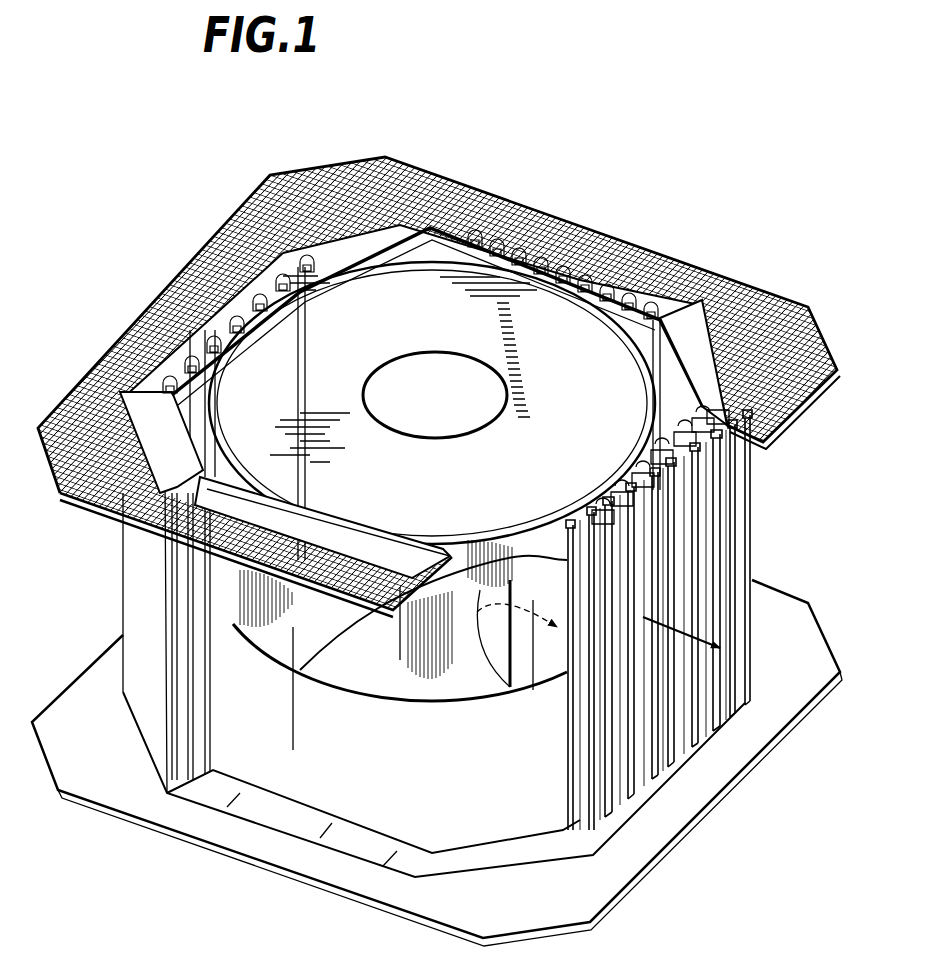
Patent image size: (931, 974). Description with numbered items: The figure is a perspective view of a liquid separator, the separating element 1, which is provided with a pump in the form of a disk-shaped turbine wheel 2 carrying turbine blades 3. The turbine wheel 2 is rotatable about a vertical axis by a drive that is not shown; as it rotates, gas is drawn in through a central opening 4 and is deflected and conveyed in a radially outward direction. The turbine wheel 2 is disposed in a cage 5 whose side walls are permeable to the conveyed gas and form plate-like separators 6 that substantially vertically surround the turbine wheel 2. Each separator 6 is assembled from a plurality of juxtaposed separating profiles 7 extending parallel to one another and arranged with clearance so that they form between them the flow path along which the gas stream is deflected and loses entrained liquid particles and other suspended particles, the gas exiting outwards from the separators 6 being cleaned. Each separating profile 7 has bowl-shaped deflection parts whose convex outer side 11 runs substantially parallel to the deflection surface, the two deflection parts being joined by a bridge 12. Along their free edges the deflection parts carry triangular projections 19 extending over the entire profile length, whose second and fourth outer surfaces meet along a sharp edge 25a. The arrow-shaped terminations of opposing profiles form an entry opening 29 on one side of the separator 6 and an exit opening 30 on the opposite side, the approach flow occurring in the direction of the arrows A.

The separating element 1 is at (592, 96).
The turbine wheel 2 is at (420, 300).
The turbine blades 3 is at (340, 640).
The central opening 4 is at (443, 409).
The cage 5 is at (697, 333).
The plate-like separators 6 is at (233, 230).
The separating profiles 7 is at (612, 467).
The convex outer side 11 is at (653, 432).
The bridge 12 is at (667, 432).
The projections 19 is at (560, 530).
The sharp edge 25a is at (567, 762).
The entry opening 29 is at (623, 460).
The exit opening 30 is at (702, 455).
The arrows indicating approach flow direction A is at (505, 618).